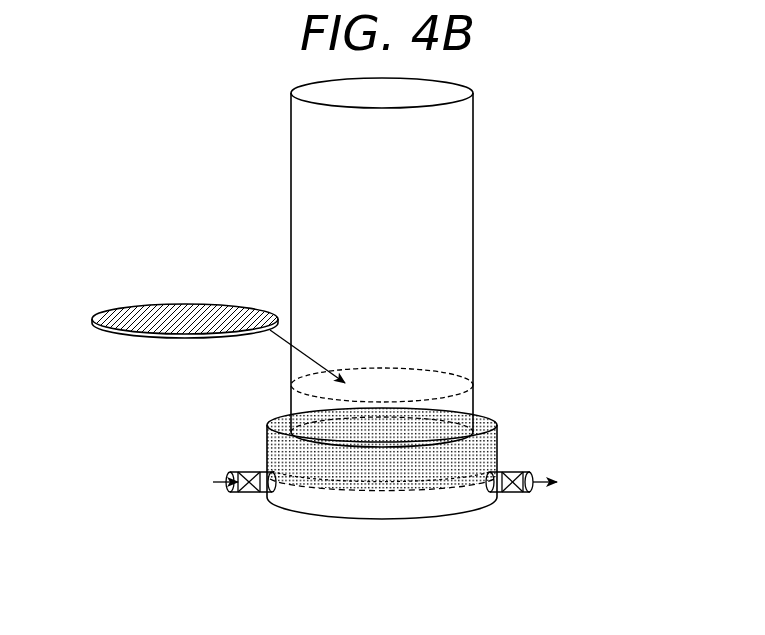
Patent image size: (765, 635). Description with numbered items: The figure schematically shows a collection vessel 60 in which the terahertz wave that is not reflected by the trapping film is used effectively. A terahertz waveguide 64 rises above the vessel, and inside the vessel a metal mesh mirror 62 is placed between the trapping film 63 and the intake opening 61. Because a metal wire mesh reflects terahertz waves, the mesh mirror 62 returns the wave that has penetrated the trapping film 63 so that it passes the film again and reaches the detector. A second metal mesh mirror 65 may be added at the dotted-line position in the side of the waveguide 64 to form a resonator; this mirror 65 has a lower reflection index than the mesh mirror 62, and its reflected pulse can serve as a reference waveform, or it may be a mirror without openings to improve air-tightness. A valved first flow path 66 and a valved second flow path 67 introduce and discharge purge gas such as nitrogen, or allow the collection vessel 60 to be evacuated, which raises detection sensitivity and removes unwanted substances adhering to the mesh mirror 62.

The collection vessel 60 is at (380, 526).
The intake opening 61 is at (307, 511).
The metal mesh mirror 62 is at (268, 460).
The trapping film 63 is at (268, 437).
The terahertz waveguide 64 is at (465, 315).
The second metal mesh mirror 65 is at (185, 305).
The valved first flow path 66 is at (244, 497).
The valved second flow path 67 is at (517, 497).